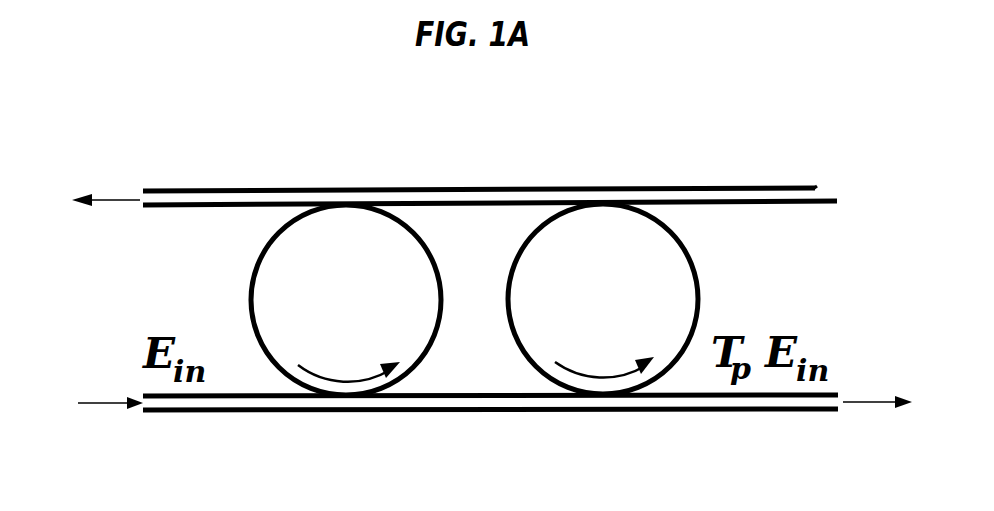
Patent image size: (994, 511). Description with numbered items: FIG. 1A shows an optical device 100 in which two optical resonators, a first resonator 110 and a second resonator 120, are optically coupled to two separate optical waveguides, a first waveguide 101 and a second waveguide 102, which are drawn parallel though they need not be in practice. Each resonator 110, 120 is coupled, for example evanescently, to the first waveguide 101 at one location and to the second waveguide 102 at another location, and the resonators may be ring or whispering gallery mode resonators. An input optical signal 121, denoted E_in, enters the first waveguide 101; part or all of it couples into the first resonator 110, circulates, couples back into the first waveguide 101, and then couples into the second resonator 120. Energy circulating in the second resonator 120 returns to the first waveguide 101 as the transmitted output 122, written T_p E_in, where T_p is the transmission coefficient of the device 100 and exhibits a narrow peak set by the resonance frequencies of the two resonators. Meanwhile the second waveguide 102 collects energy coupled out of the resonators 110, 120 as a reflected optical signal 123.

The optical device 100 is at (250, 140).
The first waveguide 101 is at (467, 412).
The second waveguide 102 is at (473, 187).
The first resonator 110 is at (366, 310).
The second resonator 120 is at (624, 310).
The input optical signal 121 is at (103, 403).
The transmitted output 122 is at (870, 402).
The reflected optical signal 123 is at (113, 200).